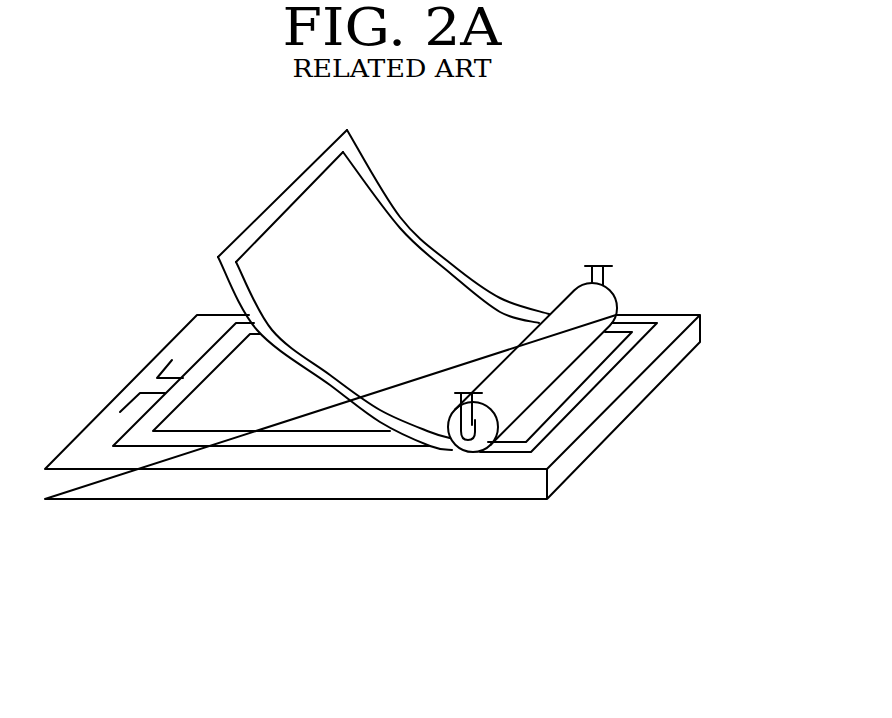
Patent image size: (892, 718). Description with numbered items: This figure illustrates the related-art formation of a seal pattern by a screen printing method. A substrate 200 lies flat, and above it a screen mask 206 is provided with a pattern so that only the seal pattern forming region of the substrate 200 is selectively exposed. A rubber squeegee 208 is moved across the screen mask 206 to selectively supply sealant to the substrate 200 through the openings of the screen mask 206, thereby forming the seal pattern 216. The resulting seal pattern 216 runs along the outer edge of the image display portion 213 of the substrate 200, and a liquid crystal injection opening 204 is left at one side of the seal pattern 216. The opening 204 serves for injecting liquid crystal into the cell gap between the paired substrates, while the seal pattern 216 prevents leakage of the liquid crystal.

The substrate 200 is at (378, 487).
The liquid crystal injection opening 204 is at (133, 378).
The screen mask 206 is at (400, 220).
The rubber squeegee 208 is at (563, 315).
The image display portion 213 is at (250, 422).
The seal pattern 216 is at (180, 448).